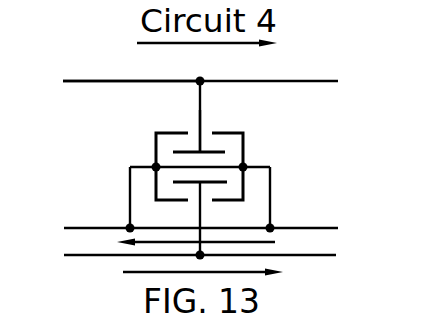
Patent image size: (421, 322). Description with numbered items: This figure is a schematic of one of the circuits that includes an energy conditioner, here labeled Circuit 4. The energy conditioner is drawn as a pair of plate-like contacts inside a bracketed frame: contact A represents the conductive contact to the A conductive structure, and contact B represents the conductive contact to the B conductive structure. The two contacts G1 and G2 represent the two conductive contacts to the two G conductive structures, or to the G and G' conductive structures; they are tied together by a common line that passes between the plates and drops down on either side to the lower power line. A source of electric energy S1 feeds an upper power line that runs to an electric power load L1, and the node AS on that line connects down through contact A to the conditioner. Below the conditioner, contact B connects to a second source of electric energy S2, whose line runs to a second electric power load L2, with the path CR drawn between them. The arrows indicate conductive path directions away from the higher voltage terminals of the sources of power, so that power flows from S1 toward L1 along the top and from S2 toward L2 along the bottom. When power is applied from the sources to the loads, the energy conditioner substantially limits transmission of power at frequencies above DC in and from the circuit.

The source of electric energy S1 is at (97, 79).
The node AS is at (203, 80).
The electric power load L1 is at (217, 80).
The conductive contact to the A conductive structure A is at (199, 129).
The conductive contact to a G conductive structure G1 is at (140, 166).
The conductive contact to a G conductive structure G2 is at (256, 167).
The conductive contact to the B conductive structure B is at (200, 218).
The electric power load L2 is at (217, 227).
The return current path CR is at (83, 229).
The source of electric energy S2 is at (72, 256).